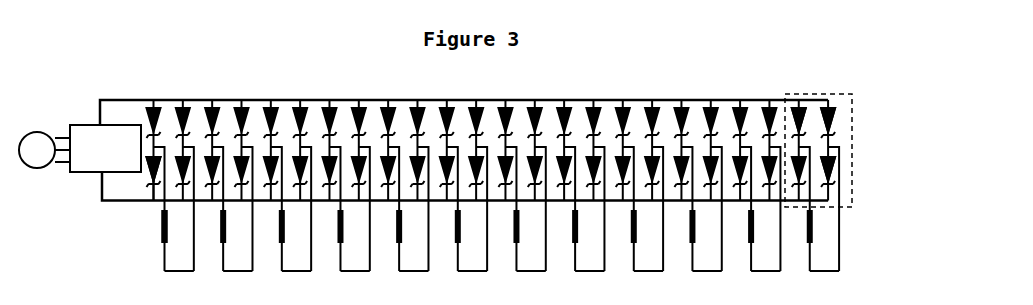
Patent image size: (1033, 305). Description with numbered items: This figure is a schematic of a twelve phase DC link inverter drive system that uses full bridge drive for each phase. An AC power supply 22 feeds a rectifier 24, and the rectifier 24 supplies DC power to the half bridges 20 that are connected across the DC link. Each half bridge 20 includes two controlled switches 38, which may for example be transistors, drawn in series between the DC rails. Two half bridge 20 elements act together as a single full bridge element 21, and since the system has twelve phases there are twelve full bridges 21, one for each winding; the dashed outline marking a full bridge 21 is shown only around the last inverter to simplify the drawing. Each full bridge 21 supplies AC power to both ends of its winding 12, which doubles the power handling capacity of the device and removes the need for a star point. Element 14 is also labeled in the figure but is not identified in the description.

The AC power supply 22 is at (35, 131).
The rectifier 24 is at (82, 125).
The light emitting diode 14 is at (160, 191).
The winding 12 is at (162, 243).
The half bridge 20 is at (791, 104).
The full bridge 21 is at (817, 97).
The controlled switch 38 is at (836, 170).